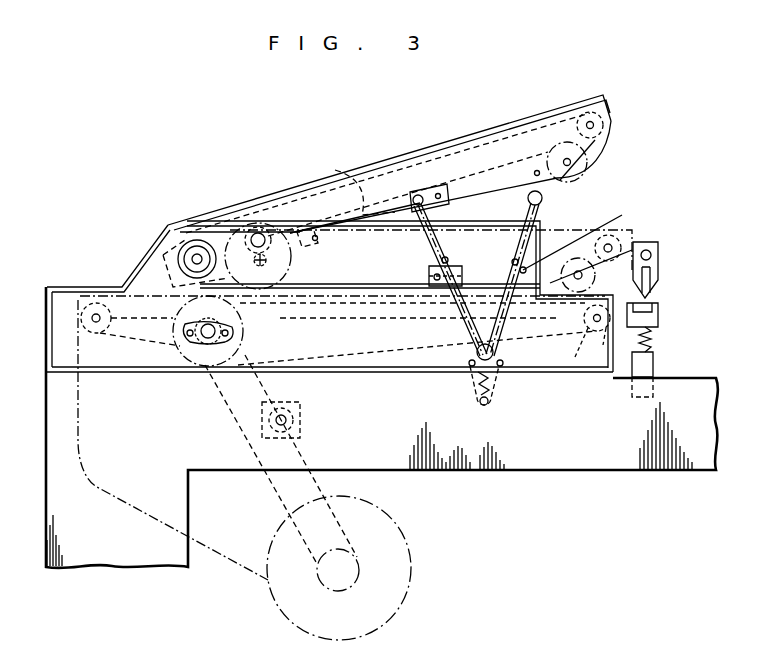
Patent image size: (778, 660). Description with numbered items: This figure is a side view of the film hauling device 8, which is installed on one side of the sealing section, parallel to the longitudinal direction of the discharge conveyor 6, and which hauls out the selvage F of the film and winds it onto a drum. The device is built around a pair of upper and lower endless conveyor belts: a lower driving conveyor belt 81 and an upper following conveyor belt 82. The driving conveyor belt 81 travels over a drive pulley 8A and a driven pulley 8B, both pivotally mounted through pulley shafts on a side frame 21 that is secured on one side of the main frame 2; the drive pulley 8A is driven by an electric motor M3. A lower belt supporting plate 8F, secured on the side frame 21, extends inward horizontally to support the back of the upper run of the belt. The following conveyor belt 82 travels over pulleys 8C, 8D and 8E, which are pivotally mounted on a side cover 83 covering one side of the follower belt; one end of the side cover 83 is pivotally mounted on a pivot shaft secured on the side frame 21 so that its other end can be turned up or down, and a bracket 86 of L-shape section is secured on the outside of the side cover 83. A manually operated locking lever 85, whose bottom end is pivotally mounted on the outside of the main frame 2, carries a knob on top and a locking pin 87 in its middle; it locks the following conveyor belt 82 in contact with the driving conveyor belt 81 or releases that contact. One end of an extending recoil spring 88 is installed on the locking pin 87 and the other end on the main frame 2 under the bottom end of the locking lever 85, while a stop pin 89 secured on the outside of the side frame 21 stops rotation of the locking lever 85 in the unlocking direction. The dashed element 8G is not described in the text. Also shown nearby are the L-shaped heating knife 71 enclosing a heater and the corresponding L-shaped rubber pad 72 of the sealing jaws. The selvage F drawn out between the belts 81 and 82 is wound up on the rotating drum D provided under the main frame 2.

The main frame 2 is at (382, 427).
The discharge conveyor 6 is at (501, 357).
The film hauling device 8 is at (657, 203).
The drive pulley 8A is at (176, 343).
The driven pulley 8B is at (585, 337).
The pulley 8C is at (258, 232).
The pulley 8D is at (595, 125).
The pulley 8E is at (572, 170).
The lower belt supporting plate 8F is at (305, 322).
The belt cover 8G is at (346, 198).
The side frame 21 is at (553, 378).
The L-shaped heating knife 71 is at (670, 270).
The L-shaped rubber pad 72 is at (667, 338).
The lower driving conveyor belt 81 is at (371, 372).
The upper following conveyor belt 82 is at (414, 160).
The side cover 83 is at (502, 128).
The locking lever 85 is at (543, 202).
The bracket 86 is at (428, 270).
The locking pin 87 is at (449, 261).
The extending recoil spring 88 is at (446, 374).
The stop pin 89 is at (576, 245).
The rotating drum D is at (405, 556).
The selvage F is at (79, 443).
The electric motor M3 is at (261, 436).